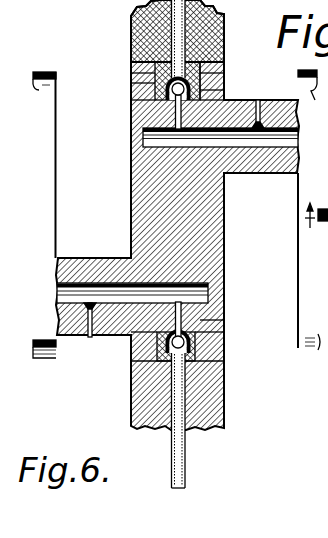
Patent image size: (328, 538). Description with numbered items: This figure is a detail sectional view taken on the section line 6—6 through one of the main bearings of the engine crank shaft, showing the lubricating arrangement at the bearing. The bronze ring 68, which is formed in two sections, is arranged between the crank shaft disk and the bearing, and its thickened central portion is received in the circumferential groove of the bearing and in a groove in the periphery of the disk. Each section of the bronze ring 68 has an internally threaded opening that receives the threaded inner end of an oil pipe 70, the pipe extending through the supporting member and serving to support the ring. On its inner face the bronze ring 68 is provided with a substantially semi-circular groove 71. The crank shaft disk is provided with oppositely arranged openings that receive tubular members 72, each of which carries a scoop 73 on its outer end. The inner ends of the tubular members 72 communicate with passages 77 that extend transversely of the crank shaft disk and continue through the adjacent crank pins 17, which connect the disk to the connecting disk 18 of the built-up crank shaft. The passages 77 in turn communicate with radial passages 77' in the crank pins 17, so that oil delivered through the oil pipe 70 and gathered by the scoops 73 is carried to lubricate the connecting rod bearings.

The section line 6 is at (316, 226).
The crank pin 17 is at (115, 262).
The connecting disk 18 is at (45, 216).
The bronze ring 68 is at (131, 63).
The oil pipe 70 is at (173, 24).
The semi-circular groove 71 is at (224, 92).
The tubular member 72 is at (158, 113).
The scoop 73 is at (165, 89).
The passage 77 is at (192, 213).
The radial passage 77' is at (179, 223).